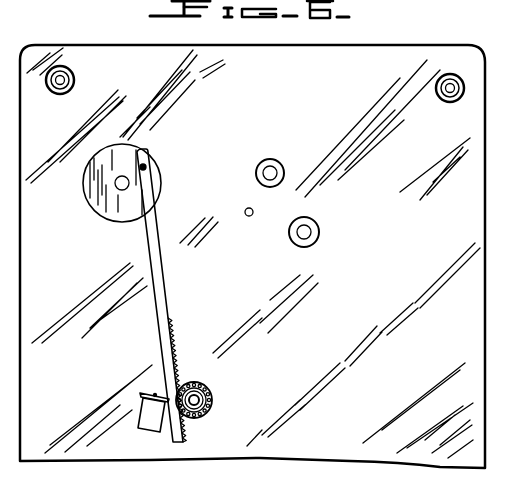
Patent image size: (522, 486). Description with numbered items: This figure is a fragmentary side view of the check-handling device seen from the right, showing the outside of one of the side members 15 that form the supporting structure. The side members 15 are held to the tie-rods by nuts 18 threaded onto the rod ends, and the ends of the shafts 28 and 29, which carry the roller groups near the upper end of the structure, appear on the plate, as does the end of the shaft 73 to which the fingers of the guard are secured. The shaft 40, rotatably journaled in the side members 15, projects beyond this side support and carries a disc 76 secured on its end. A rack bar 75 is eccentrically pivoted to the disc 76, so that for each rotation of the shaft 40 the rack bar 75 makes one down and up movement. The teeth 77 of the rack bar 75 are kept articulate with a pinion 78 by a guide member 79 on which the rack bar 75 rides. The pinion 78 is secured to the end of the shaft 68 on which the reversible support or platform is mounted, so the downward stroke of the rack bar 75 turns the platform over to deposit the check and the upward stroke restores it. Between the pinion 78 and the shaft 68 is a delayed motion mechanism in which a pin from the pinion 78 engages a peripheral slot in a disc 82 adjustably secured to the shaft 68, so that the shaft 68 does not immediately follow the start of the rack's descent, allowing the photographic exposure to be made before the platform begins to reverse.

The side member 15 is at (480, 160).
The nut 18 is at (72, 76).
The shaft 28 is at (306, 230).
The shaft 29 is at (272, 170).
The shaft 40 is at (115, 183).
The shaft 68 is at (213, 397).
The shaft 73 is at (253, 210).
The rack bar 75 is at (163, 291).
The disc 76 is at (95, 198).
The teeth 77 is at (183, 343).
The pinion 78 is at (200, 418).
The guide member 79 is at (147, 420).
The disc 82 is at (212, 404).